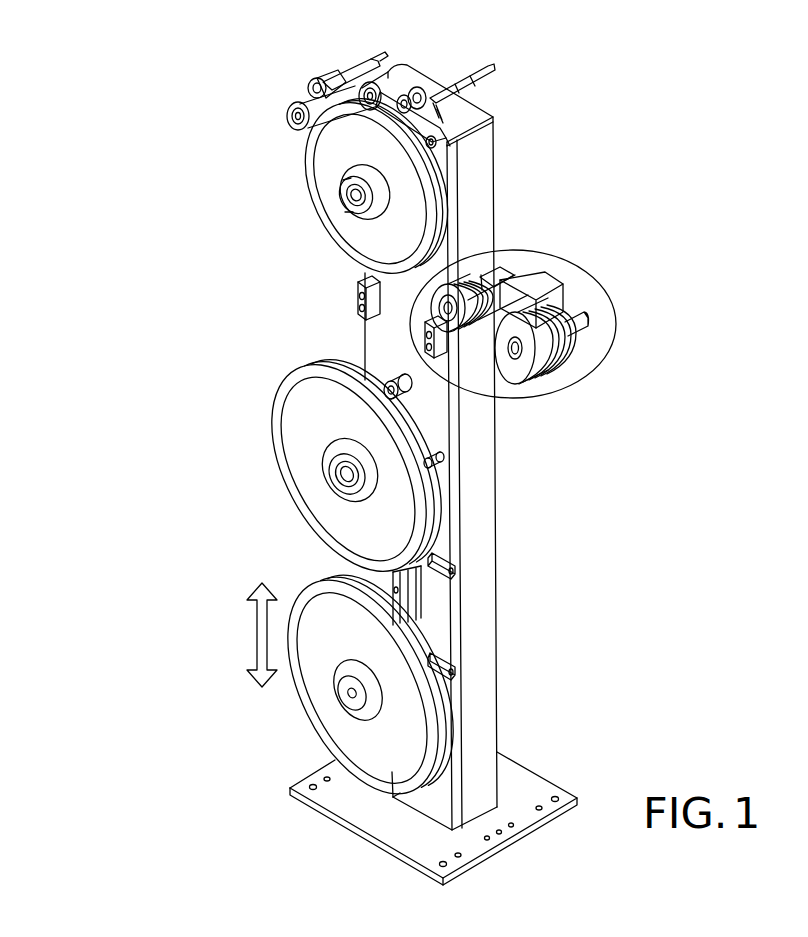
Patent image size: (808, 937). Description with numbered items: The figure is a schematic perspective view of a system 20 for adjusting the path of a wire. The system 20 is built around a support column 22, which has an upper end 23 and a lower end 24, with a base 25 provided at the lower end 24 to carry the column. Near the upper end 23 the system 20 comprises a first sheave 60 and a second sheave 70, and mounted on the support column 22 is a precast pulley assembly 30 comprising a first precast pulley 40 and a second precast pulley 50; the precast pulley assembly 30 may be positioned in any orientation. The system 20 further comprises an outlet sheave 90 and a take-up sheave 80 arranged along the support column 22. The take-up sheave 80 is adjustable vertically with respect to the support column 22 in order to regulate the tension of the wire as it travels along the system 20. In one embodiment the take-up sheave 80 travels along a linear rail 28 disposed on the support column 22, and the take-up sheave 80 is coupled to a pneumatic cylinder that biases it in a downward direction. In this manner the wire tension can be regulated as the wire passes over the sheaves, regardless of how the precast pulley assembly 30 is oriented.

The system 20 is at (214, 277).
The support column 22 is at (480, 525).
The upper end 23 is at (483, 153).
The lower end 24 is at (480, 800).
The base 25 is at (540, 795).
The linear rail 28 is at (415, 605).
The precast pulley assembly 30 is at (590, 272).
The first precast pulley 40 is at (460, 265).
The second precast pulley 50 is at (562, 366).
The first sheave 60 is at (437, 176).
The second sheave 70 is at (333, 162).
The take-up sheave 80 is at (334, 692).
The outlet sheave 90 is at (316, 427).